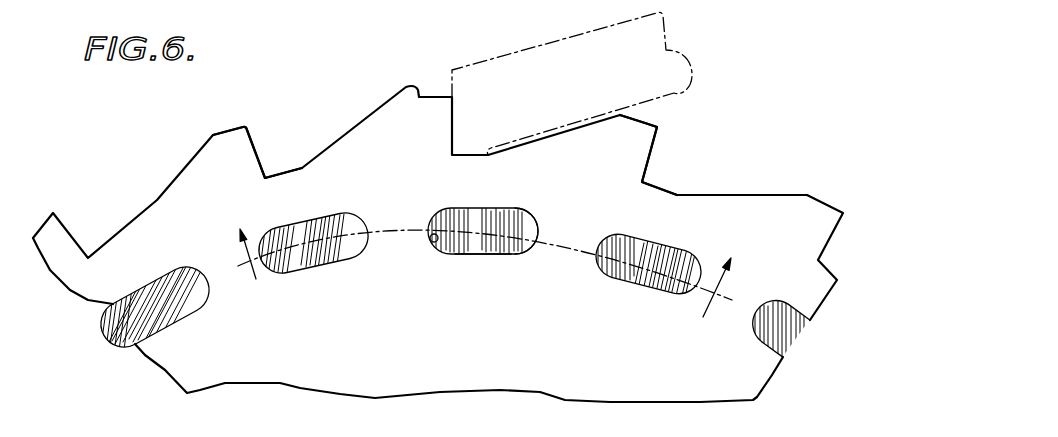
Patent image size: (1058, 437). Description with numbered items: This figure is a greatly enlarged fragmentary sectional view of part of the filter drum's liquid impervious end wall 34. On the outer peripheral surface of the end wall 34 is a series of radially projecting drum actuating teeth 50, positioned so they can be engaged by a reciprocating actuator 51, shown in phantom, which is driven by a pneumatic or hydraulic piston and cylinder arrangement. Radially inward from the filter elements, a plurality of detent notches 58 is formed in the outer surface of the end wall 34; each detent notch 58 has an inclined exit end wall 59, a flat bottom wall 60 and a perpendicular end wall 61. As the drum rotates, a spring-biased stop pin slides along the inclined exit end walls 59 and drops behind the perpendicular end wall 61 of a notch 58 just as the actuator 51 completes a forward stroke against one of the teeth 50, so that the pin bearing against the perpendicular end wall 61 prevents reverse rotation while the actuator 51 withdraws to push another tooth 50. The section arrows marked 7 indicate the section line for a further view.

The end wall 34 is at (167, 179).
The drum actuating teeth 50 is at (405, 88).
The reciprocating actuator 51 is at (547, 42).
The detent notches 58 is at (625, 228).
The inclined exit end wall 59 is at (517, 246).
The flat bottom wall 60 is at (468, 247).
The perpendicular end wall 61 is at (437, 246).
The section line 7- 7 is at (483, 273).